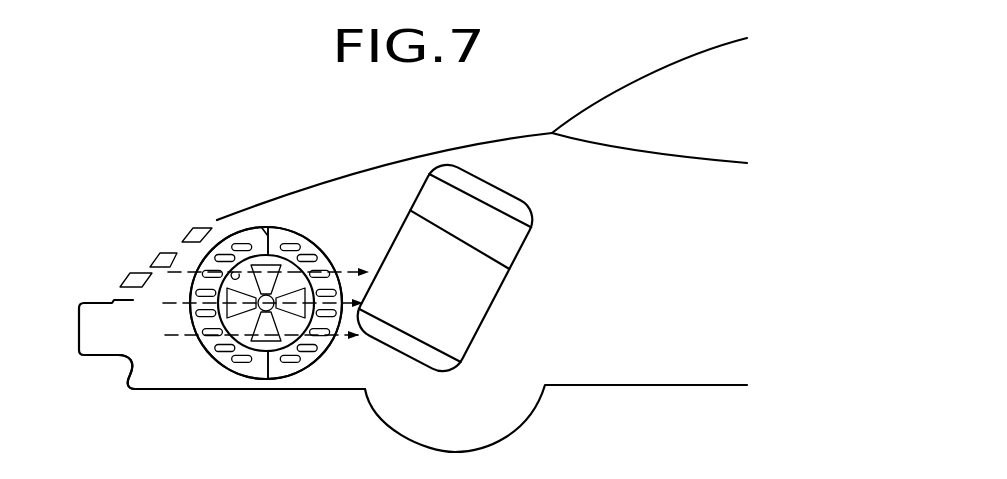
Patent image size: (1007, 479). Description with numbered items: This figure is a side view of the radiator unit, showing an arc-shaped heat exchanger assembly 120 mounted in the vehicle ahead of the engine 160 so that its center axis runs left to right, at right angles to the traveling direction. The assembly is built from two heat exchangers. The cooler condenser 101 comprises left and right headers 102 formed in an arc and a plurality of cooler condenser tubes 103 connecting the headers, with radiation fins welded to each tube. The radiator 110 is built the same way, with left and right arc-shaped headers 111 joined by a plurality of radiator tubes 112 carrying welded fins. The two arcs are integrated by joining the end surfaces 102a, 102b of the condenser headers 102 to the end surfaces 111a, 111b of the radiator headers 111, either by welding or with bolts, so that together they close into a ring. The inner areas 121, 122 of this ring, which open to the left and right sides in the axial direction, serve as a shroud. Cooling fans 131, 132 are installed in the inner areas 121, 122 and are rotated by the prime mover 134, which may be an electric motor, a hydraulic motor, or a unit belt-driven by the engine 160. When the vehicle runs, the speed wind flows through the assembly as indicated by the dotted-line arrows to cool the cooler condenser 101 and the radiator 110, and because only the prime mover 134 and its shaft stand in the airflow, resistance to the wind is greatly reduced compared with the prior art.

The cooler condenser 101 is at (310, 254).
The header 102 is at (292, 240).
The end surface of header 102a is at (278, 240).
The end surface of header 102b is at (271, 368).
The cooler condenser tube 103 is at (290, 366).
The radiator 110 is at (203, 345).
The header 111 is at (233, 272).
The end surface of header 111a is at (264, 232).
The end surface of header 111b is at (268, 367).
The radiator tube 112 is at (215, 357).
The heat exchanger assembly 120 is at (262, 222).
The inner area 121 is at (220, 282).
The inner area 122 is at (136, 280).
The cooling fan 131 is at (260, 328).
The cooling fan 132 is at (266, 303).
The prime mover 134 is at (283, 318).
The engine 160 is at (500, 242).